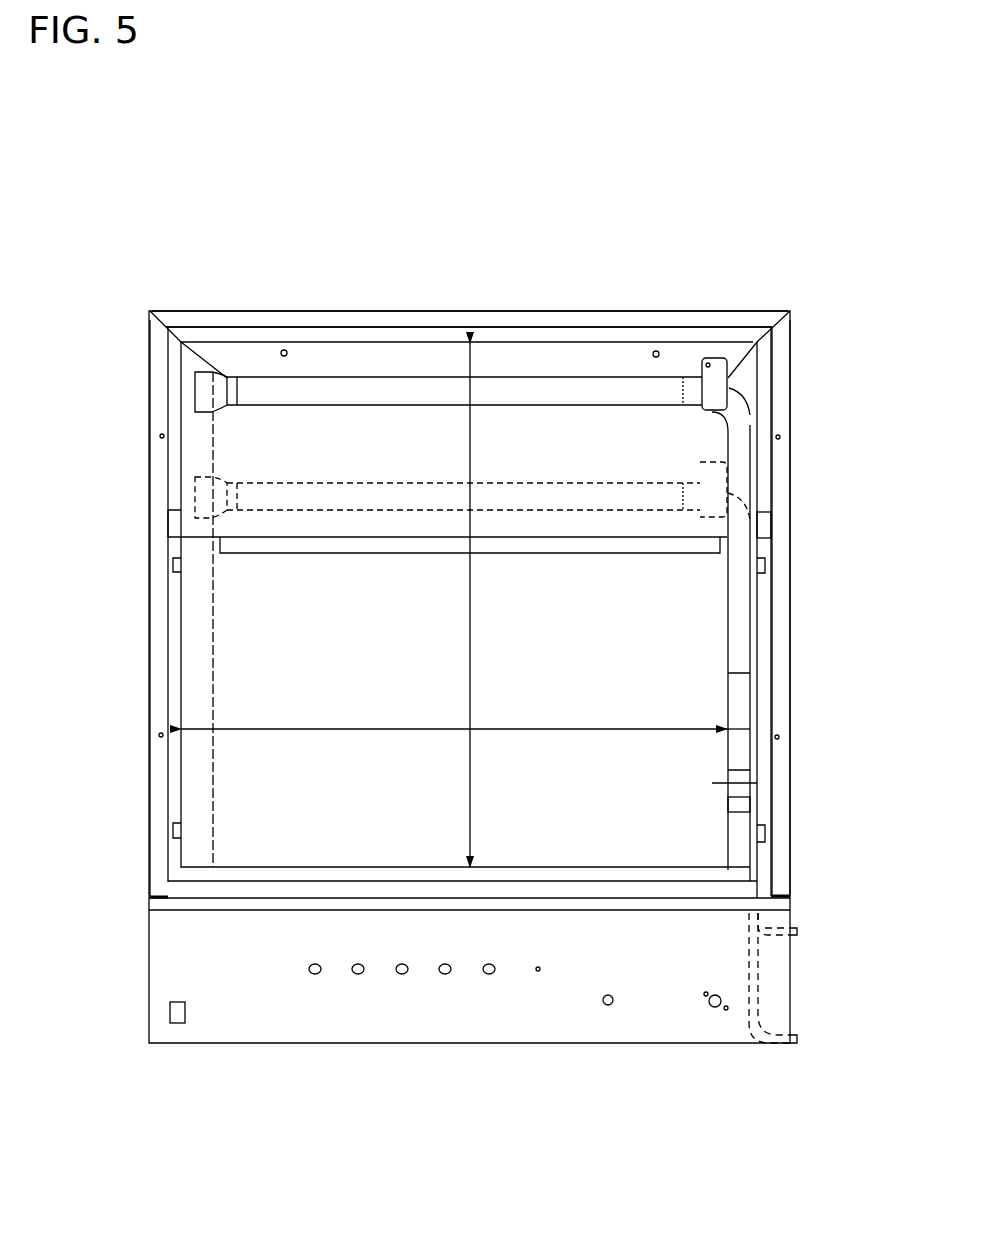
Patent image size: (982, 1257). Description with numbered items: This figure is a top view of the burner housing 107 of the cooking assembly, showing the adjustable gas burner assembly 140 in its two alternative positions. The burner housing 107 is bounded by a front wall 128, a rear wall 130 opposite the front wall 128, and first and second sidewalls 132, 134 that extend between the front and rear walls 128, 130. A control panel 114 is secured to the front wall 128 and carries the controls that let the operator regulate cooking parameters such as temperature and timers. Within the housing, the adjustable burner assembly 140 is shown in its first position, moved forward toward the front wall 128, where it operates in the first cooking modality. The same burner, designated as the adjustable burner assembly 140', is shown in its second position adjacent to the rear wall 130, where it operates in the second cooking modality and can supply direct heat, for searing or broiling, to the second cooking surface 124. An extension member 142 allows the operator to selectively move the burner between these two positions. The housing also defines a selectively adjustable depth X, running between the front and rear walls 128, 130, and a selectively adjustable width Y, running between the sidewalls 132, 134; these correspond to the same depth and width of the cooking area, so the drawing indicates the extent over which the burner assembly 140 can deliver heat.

The burner housing 107 is at (469, 541).
The rear wall 130 is at (345, 311).
The first sidewall 132 is at (155, 560).
The second sidewall 134 is at (778, 570).
The adjustable burner assembly in second position 140' is at (388, 398).
The adjustable burner assembly 140 is at (404, 494).
The second cooking surface 124 is at (742, 387).
The front wall 128 is at (275, 873).
The control panel 114 is at (435, 1020).
The extension member 142 is at (802, 1037).
The selectively adjustable depth X is at (472, 633).
The selectively adjustable width Y is at (360, 730).